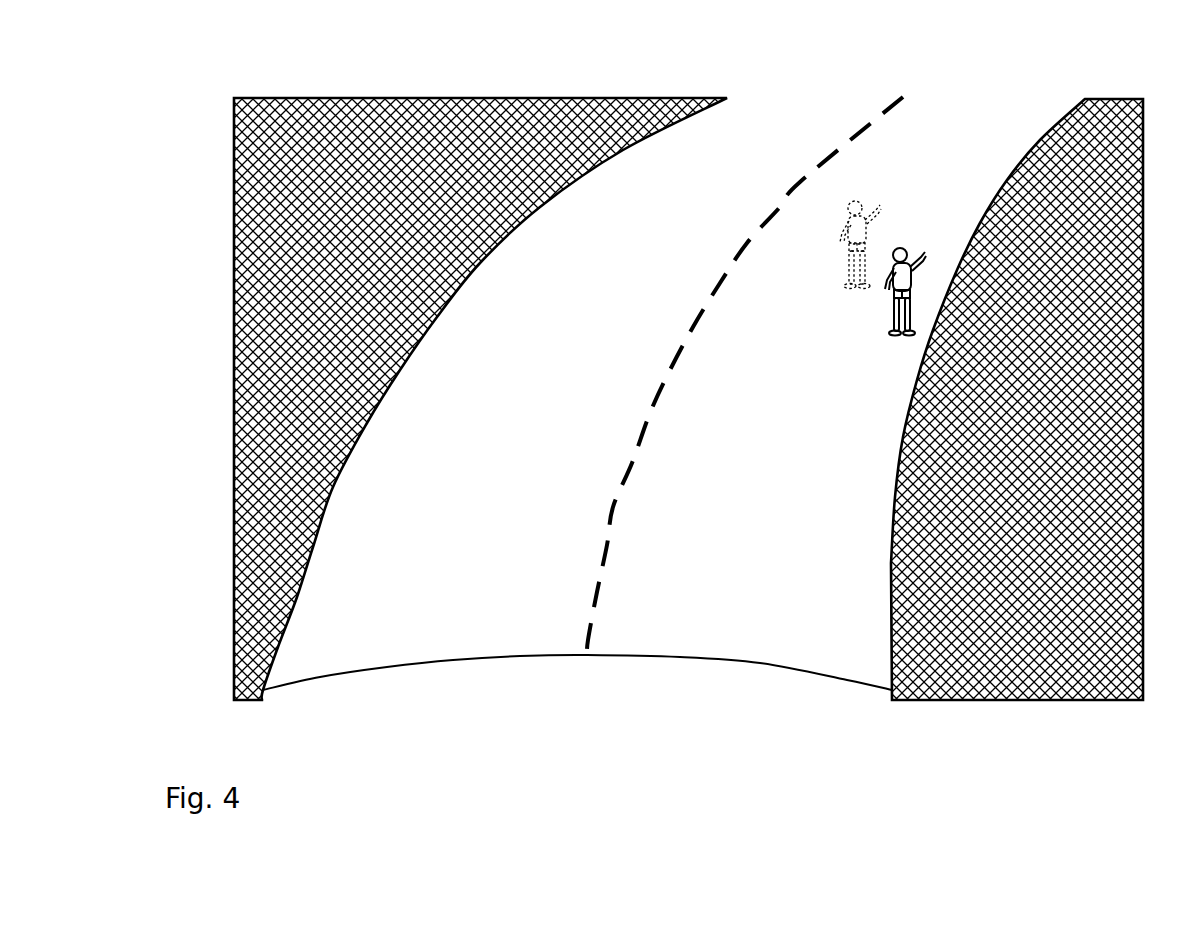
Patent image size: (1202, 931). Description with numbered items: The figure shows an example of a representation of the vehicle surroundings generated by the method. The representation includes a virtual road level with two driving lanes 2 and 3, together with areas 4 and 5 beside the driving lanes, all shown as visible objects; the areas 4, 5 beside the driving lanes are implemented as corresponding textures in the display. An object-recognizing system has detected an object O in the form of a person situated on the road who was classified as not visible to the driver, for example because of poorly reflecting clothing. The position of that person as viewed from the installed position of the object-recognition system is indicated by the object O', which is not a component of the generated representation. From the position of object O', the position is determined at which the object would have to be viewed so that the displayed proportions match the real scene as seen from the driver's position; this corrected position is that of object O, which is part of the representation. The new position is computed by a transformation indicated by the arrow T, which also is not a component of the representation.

The driving lane 2 is at (782, 137).
The driving lane 3 is at (755, 635).
The area beside the driving lanes 4 is at (497, 118).
The area beside the driving lanes 5 is at (1120, 270).
The object O is at (916, 275).
The object O' is at (841, 243).
The arrow T is at (872, 332).